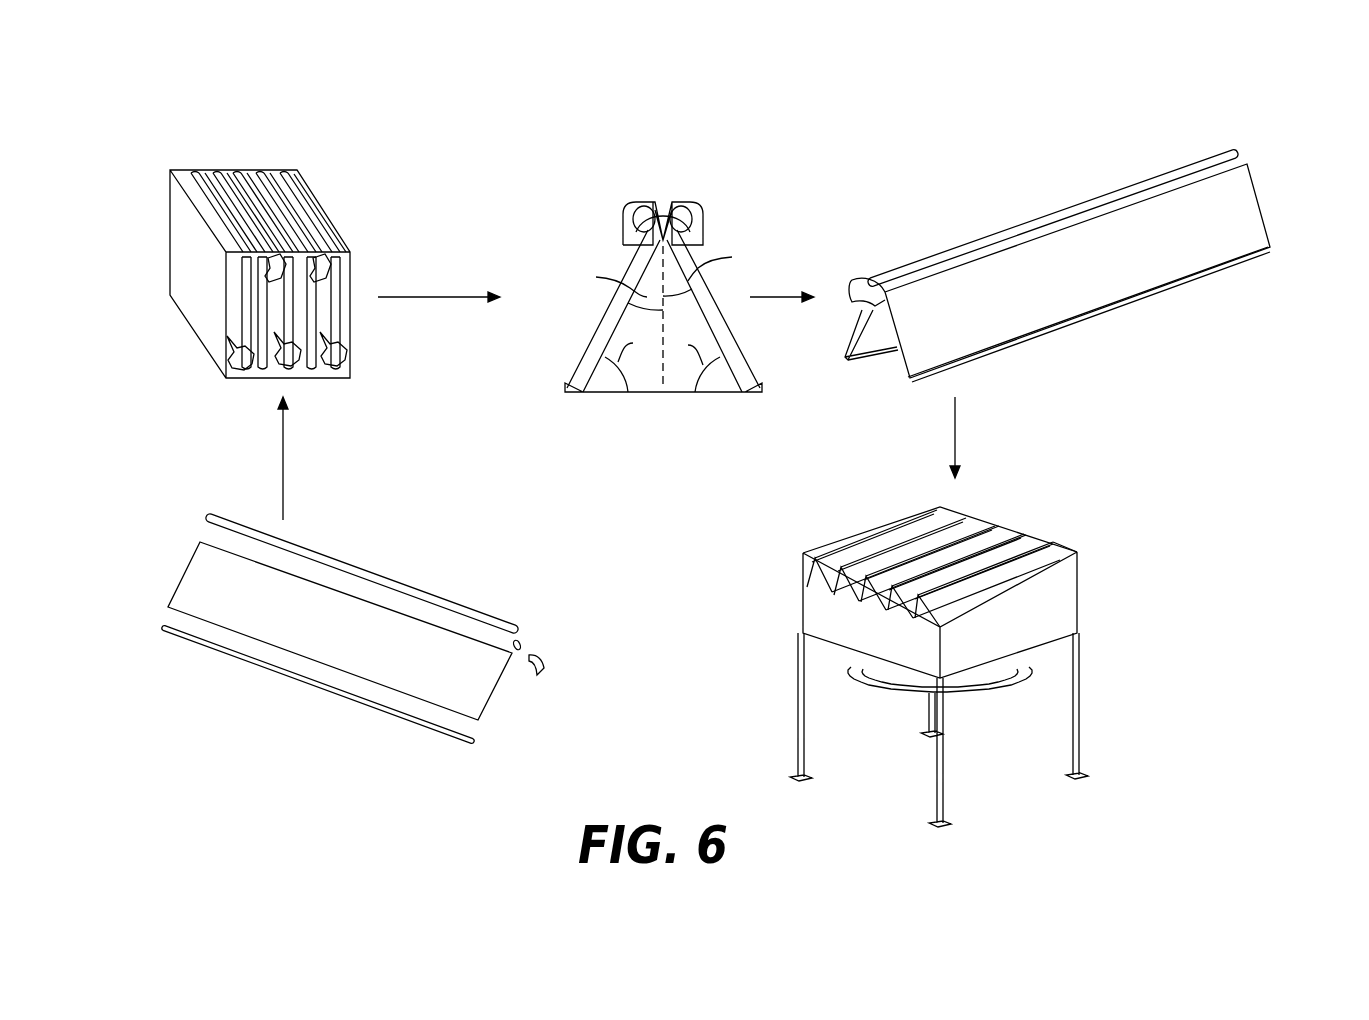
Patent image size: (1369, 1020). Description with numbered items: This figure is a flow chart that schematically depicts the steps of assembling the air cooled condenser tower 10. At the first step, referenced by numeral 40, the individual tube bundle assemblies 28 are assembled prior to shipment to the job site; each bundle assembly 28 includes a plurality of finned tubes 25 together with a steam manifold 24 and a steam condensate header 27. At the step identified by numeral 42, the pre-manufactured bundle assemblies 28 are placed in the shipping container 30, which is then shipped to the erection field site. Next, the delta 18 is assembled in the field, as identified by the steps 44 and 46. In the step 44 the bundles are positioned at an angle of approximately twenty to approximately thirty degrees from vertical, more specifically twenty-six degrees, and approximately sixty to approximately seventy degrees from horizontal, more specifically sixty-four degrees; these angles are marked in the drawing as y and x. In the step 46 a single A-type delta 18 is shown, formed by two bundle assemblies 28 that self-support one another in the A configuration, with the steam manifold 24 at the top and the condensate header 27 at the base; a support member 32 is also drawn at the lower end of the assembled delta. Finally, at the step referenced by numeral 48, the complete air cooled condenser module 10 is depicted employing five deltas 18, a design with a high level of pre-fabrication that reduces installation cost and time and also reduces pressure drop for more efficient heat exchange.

The air cooled condenser tower 10 is at (1148, 556).
The delta 18 is at (805, 105).
The steam manifold 24 is at (634, 207).
The finned tubes 25 is at (495, 688).
The steam condensate header 27 is at (752, 392).
The tube bundle assembly 28 is at (545, 608).
The shipping container 30 is at (338, 238).
The support leg 32 is at (893, 351).
The step of assembling tube bundles 40 is at (298, 748).
The step of placing bundles in shipping container 42 is at (270, 136).
The step of assembling the delta 44 is at (673, 437).
The step of forming the A-type delta 46 is at (1137, 362).
The step of forming the condenser module 48 is at (1032, 828).